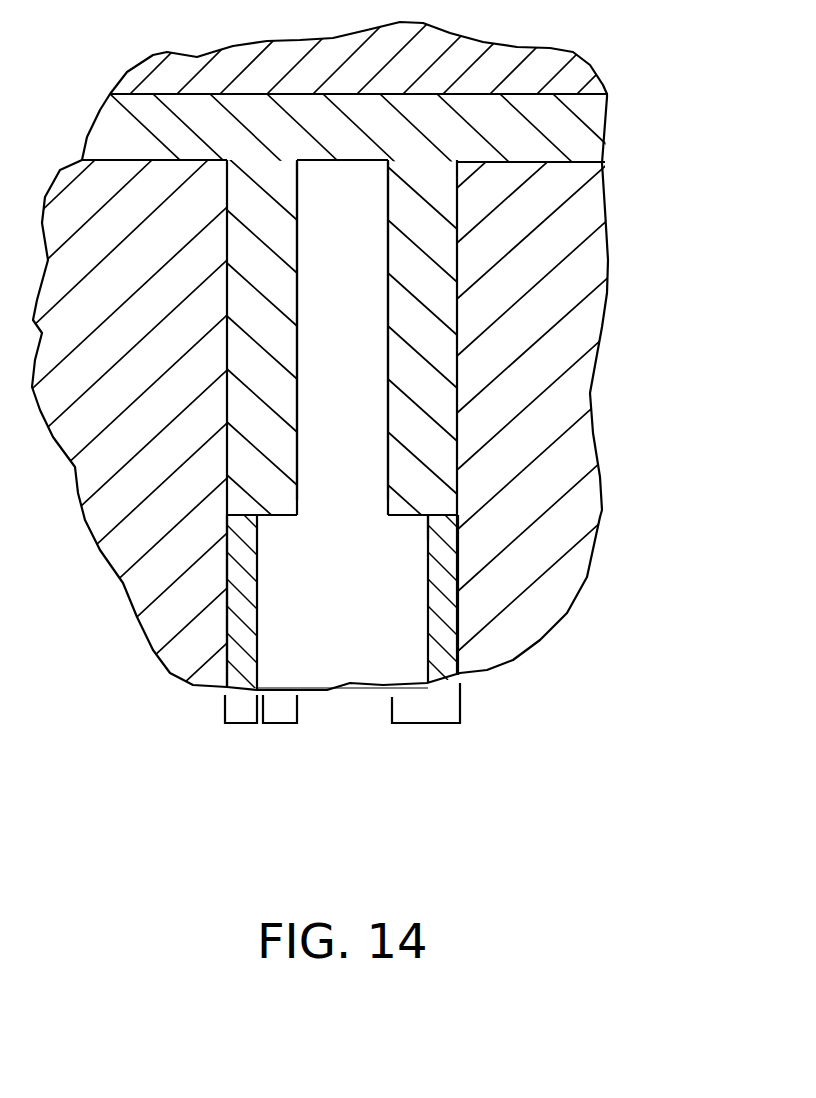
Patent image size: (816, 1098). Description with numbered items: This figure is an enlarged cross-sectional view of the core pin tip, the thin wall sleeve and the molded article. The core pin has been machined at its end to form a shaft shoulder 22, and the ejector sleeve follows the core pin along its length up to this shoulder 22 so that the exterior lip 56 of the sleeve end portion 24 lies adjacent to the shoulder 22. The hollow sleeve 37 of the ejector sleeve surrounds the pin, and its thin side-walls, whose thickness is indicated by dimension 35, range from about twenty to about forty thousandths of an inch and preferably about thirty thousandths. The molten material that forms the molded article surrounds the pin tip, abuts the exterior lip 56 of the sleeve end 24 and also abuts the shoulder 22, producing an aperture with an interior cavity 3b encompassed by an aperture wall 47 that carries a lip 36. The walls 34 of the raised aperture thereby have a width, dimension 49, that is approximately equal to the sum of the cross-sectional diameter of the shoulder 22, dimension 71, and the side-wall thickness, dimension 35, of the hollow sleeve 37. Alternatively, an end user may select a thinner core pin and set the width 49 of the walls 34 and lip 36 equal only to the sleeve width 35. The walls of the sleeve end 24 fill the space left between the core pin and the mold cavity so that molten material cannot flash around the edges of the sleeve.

The walls of the raised aperture 34 is at (265, 277).
The bore 3b is at (358, 370).
The aperture wall 47 is at (417, 413).
The lip 36 is at (418, 502).
The hollow sleeve 37 is at (240, 579).
The sleeve end portion 24 is at (443, 637).
The shaft shoulder 22 is at (400, 518).
The exterior lip 56 is at (222, 543).
The side-wall thickness dimension 35 is at (242, 723).
The shoulder diameter dimension 71 is at (280, 723).
The raised aperture wall width dimension 49 is at (428, 723).